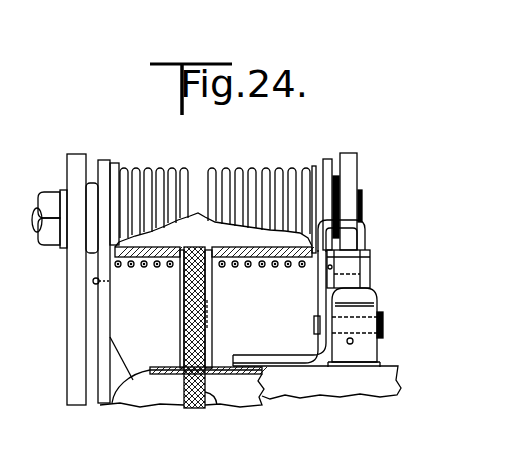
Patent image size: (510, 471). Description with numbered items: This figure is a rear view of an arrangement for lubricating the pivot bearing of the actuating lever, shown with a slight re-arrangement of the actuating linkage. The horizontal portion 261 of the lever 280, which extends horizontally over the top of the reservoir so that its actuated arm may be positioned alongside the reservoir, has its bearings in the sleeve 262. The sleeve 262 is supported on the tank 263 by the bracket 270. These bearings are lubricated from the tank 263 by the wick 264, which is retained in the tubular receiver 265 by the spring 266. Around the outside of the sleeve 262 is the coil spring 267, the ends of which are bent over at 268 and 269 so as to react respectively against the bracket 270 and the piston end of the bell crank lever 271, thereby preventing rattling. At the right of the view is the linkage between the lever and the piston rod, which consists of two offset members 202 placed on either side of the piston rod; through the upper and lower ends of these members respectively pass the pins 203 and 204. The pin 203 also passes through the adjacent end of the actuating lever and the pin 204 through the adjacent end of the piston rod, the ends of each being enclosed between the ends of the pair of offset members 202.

The horizontal portion 261 is at (222, 232).
The sleeve 262 is at (195, 182).
The tank 263 is at (348, 387).
The wick 264 is at (217, 402).
The tubular receiver 265 is at (212, 304).
The spring 266 is at (183, 300).
The coil spring 267 is at (132, 180).
The bent-over end of coil spring 268 is at (93, 281).
The bent-over end of coil spring 269 is at (366, 228).
The bracket 270 is at (100, 328).
The bell crank lever 271 is at (345, 184).
The lever 280 is at (72, 372).
The offset members 202 is at (371, 292).
The pin 203 is at (357, 270).
The pin 204 is at (370, 343).